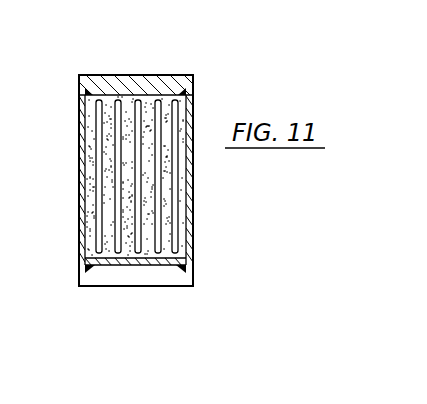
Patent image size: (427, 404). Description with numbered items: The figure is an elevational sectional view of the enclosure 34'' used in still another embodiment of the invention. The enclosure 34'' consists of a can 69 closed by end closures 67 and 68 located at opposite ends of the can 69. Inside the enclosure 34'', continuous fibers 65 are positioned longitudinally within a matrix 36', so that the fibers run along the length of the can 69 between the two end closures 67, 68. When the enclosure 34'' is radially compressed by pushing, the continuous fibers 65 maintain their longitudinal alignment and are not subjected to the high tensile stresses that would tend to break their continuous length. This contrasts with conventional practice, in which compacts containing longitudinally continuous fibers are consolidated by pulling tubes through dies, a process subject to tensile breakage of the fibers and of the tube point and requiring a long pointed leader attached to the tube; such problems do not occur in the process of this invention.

The end closure 67 is at (96, 86).
The continuous fibers 65 is at (157, 99).
The matrix 36' is at (103, 176).
The can 69 is at (87, 200).
The end closure 68 is at (100, 265).
The enclosure 34'' is at (199, 180).